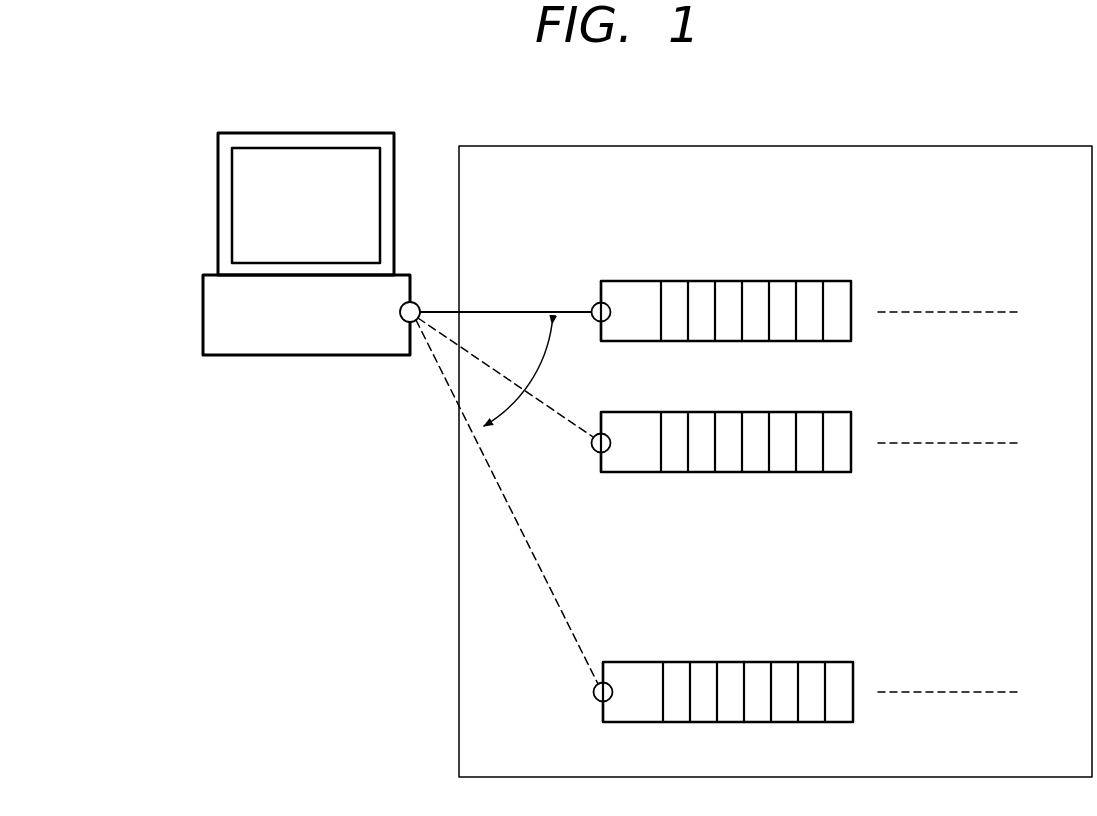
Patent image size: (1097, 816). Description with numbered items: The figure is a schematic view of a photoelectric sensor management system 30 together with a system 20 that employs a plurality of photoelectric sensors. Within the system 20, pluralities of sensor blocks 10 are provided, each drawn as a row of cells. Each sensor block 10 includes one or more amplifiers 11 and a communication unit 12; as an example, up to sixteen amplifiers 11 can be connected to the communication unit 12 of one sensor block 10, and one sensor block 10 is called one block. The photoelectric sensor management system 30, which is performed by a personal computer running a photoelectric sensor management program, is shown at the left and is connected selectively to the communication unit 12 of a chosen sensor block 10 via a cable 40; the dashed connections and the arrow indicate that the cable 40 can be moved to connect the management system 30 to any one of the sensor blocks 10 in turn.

The sensor block 10 is at (852, 272).
The amplifier 11 is at (677, 281).
The communication unit 12 is at (637, 281).
The system 20 is at (506, 146).
The photoelectric sensor management system 30 is at (230, 133).
The cable 40 is at (520, 312).